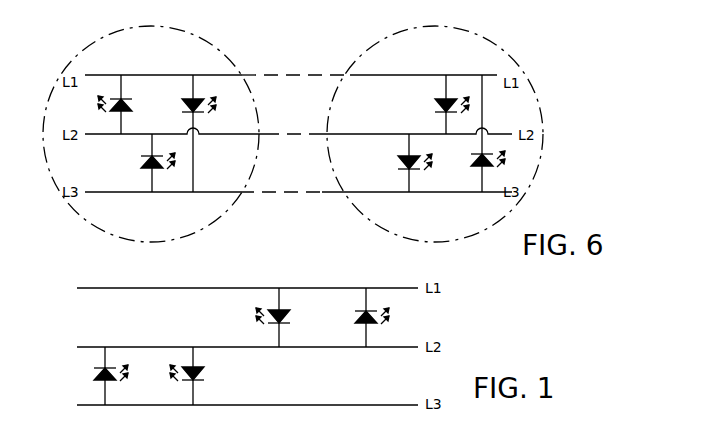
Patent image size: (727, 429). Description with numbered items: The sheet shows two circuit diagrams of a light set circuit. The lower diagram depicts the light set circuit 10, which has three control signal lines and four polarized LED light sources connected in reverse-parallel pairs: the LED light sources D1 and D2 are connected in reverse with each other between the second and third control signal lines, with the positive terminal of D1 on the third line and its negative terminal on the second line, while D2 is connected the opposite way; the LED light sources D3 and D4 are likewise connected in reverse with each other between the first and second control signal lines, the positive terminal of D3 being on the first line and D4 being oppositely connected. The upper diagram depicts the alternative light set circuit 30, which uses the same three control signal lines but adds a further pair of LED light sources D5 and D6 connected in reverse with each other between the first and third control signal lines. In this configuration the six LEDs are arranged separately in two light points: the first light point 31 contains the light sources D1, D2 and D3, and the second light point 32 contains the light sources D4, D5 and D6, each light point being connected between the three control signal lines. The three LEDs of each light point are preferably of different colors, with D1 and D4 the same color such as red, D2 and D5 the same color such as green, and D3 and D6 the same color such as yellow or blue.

In FIG. 1, the light set circuit 10 is at (487, 316).
In FIG. 6, the alternative configuration of the light set circuit 30 is at (572, 180).
In FIG. 6, the first light point 31 is at (92, 230).
In FIG. 6, the second light point 32 is at (372, 230).
In FIG. 6, the first LED light source D1 is at (129, 98).
In FIG. 1, the first LED light source D1 is at (96, 380).
In FIG. 6, the second LED light source D2 is at (143, 167).
In FIG. 1, the second LED light source D2 is at (199, 380).
In FIG. 6, the third LED light source D3 is at (210, 99).
In FIG. 1, the third LED light source D3 is at (261, 310).
In FIG. 6, the fourth LED light source D4 is at (401, 167).
In FIG. 1, the fourth LED light source D4 is at (385, 310).
In FIG. 6, the fifth LED light source D5 is at (438, 100).
In FIG. 6, the sixth LED light source D6 is at (473, 166).